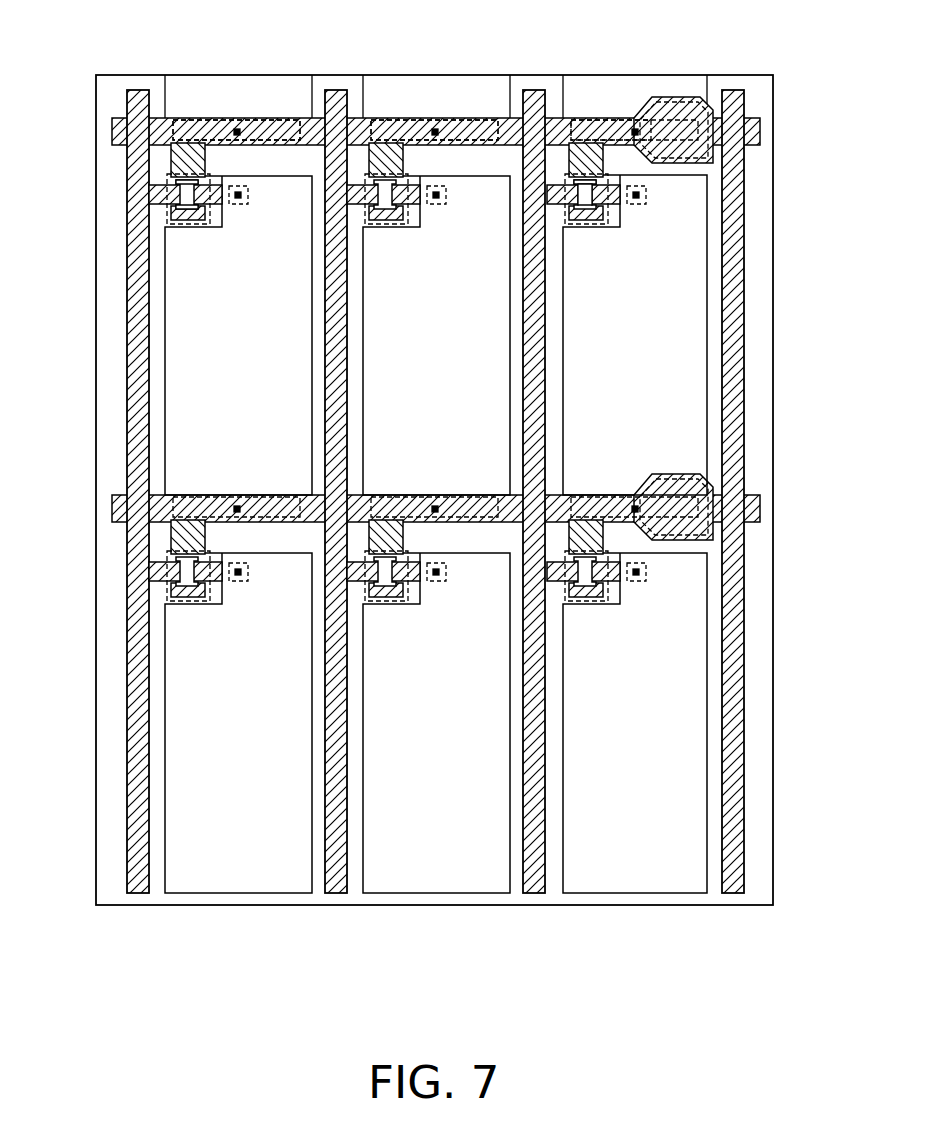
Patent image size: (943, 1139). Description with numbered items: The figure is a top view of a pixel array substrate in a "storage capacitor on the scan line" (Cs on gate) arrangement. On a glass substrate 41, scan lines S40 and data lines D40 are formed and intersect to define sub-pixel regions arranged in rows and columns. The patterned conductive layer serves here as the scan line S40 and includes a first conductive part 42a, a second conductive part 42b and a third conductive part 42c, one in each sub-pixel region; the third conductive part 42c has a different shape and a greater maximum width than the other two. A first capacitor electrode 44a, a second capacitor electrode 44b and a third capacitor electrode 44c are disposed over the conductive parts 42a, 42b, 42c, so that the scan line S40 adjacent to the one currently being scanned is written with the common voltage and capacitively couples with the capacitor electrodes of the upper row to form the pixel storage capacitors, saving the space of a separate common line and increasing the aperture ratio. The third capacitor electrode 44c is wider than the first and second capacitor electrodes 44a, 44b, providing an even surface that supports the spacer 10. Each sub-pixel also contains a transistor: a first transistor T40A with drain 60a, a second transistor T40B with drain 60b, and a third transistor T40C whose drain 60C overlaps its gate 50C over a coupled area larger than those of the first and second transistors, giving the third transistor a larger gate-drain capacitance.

The substrate 41 is at (112, 87).
The first conductive part 42a is at (234, 118).
The second conductive part 42b is at (432, 118).
The third conductive part 42c is at (607, 115).
The spacer 10 is at (665, 97).
The data line D40 is at (733, 90).
The scan line S40 is at (762, 130).
The first capacitor electrode 44a is at (273, 146).
The second capacitor electrode 44b is at (471, 146).
The third capacitor electrode 44c is at (702, 165).
The drain 60a is at (180, 203).
The drain 60b is at (174, 216).
The drain 60C is at (603, 203).
The gate 50C is at (596, 228).
The first transistor T40A is at (183, 230).
The second transistor T40B is at (381, 230).
The third transistor T40C is at (578, 230).